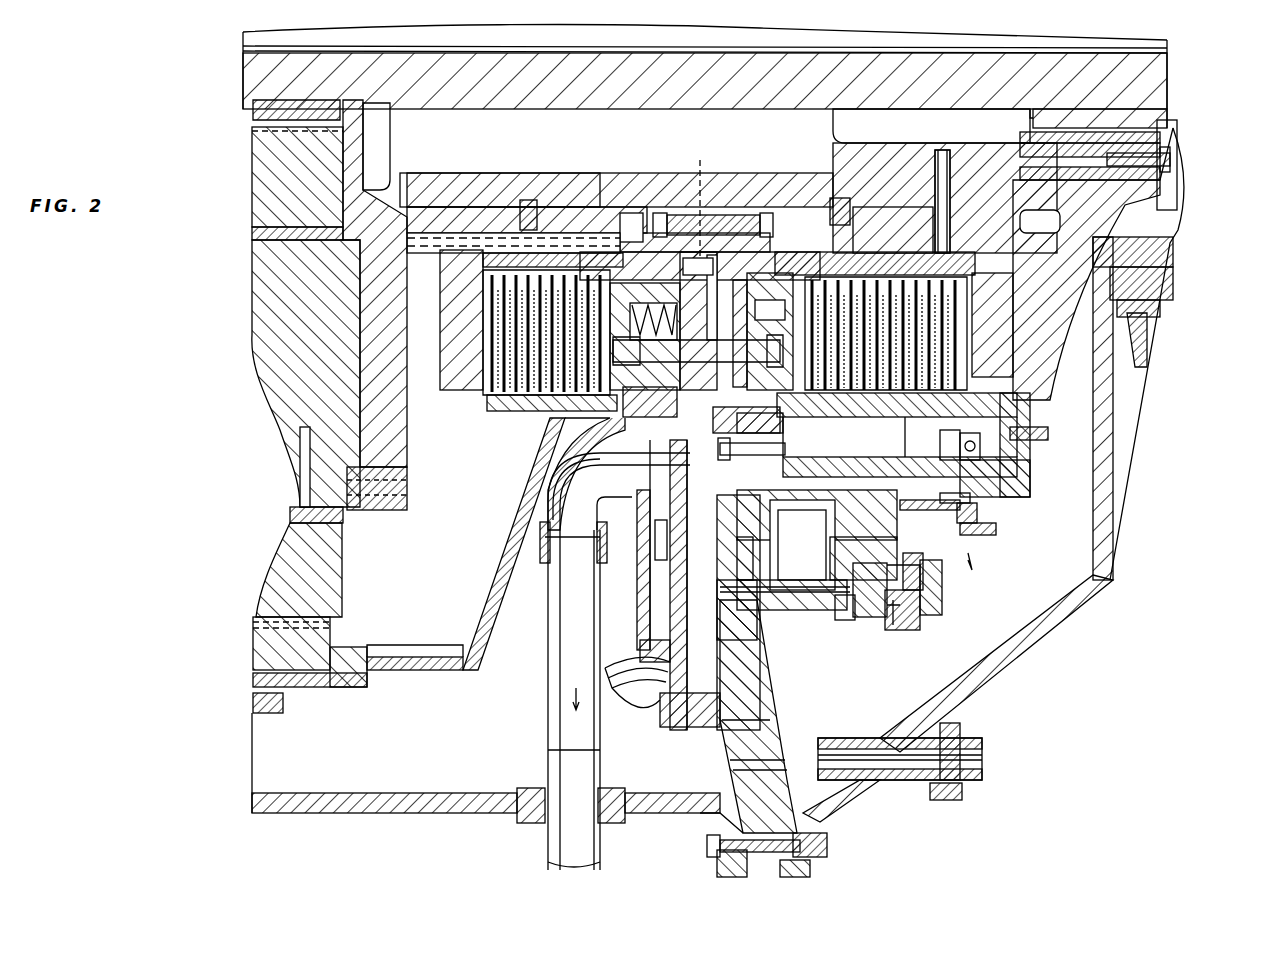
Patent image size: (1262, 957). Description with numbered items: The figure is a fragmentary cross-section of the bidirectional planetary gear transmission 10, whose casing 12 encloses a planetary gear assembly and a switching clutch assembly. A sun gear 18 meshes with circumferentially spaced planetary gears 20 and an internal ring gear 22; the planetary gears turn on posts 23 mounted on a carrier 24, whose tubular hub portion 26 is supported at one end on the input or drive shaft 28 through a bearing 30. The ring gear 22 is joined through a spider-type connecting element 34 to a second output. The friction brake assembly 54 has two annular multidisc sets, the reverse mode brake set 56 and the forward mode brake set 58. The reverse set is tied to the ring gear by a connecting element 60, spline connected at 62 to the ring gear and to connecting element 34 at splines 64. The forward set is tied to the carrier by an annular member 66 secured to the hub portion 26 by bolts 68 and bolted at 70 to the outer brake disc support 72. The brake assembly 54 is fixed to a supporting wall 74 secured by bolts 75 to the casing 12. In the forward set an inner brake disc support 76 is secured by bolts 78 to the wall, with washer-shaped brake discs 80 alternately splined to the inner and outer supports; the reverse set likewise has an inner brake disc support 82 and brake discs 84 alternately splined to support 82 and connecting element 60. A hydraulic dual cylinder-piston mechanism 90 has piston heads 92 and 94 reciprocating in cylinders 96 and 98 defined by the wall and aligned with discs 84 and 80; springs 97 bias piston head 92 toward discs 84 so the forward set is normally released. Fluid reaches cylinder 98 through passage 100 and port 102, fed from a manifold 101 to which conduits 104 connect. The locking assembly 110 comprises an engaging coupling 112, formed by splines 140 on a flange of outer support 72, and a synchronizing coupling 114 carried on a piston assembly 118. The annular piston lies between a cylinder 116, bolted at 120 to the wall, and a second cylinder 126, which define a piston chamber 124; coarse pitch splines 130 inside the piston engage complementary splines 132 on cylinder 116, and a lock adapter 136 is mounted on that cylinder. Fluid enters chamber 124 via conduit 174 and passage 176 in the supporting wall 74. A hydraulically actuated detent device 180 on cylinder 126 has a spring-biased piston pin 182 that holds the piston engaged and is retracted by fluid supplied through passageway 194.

The transmission 10 is at (1196, 410).
The casing 12 is at (1000, 662).
The sun gear 18 is at (345, 108).
The planetary gears 20 is at (272, 200).
The internal ring gear 22 is at (262, 648).
The posts 23 is at (262, 374).
The carrier 24 is at (407, 445).
The tubular hub portion 26 is at (700, 222).
The input or drive shaft 28 is at (582, 50).
The bearing 30 is at (1027, 137).
The connecting element 34 is at (258, 720).
The friction brake assembly 54 is at (640, 205).
The reverse mode brake set 56 is at (478, 413).
The forward mode brake set 58 is at (850, 232).
The connecting element 60 is at (472, 640).
The spline connection 62 is at (380, 660).
The splines 64 is at (283, 700).
The annular member 66 is at (1168, 190).
The bolts 68 is at (1170, 159).
The bolted connection 70 is at (1035, 440).
The outer brake disc support 72 is at (1030, 470).
The supporting wall 74 is at (757, 700).
The bolts 75 is at (828, 845).
The inner brake disc support 76 is at (768, 213).
The bolts 78 is at (705, 225).
The brake discs 80 is at (838, 405).
The inner brake disc support 82 is at (488, 233).
The brake discs 84 is at (520, 410).
The hydraulic dual cylinder-piston mechanism 90 is at (625, 420).
The piston head 92 is at (635, 238).
The piston head 94 is at (790, 310).
The cylinder 96 is at (580, 468).
The springs 97 is at (566, 478).
The cylinder 98 is at (755, 395).
The passage 100 is at (717, 505).
The manifold 101 is at (645, 590).
The port 102 is at (715, 460).
The conduits 104 is at (560, 606).
The locking assembly 110 is at (964, 557).
The engaging coupling 112 is at (1020, 493).
The synchronizing coupling 114 is at (1000, 530).
The cylinder 116 is at (882, 465).
The piston assembly 118 is at (817, 550).
The bolted connection 120 is at (786, 449).
The piston chamber 124 is at (806, 565).
The second cylinder 126 is at (795, 605).
The coarse pitch set of splines 130 is at (897, 490).
The complementary splines 132 is at (910, 510).
The lock adapter 136 is at (1008, 454).
The splines 140 is at (985, 510).
The conduit 174 is at (612, 705).
The passage 176 is at (652, 641).
The hydraulically actuated detent device 180 is at (901, 646).
The piston pin 182 is at (925, 575).
The passageway 194 is at (840, 620).